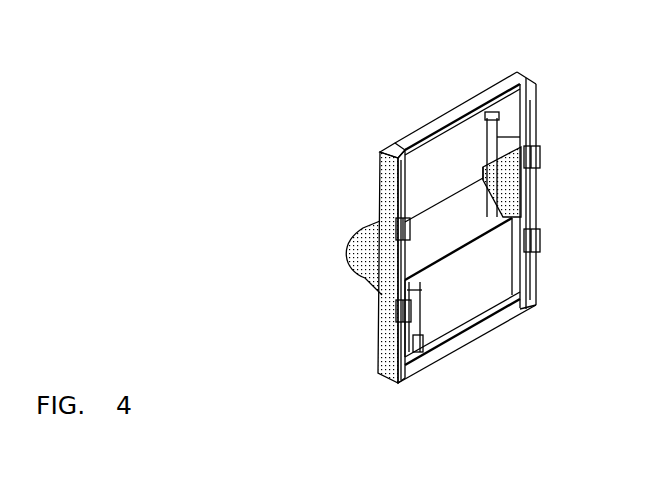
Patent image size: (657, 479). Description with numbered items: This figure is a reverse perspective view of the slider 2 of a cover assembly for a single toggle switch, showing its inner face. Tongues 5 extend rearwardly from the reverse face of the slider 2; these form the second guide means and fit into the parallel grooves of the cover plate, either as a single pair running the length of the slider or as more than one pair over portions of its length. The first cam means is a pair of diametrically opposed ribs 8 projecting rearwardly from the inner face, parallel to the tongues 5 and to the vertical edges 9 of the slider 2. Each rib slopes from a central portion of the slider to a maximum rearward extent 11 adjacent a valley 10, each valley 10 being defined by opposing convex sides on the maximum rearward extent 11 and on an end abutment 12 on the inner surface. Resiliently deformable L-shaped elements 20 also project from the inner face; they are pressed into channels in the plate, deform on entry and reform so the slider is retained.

The slider 2 is at (480, 280).
The tongues 5 is at (407, 188).
The ribs 8 is at (498, 148).
The vertical edges 9 is at (532, 196).
The valley 10 is at (462, 145).
The maximum rearward extent 11 is at (505, 126).
The end abutment 12 is at (493, 100).
The L-shaped elements 20 is at (553, 157).